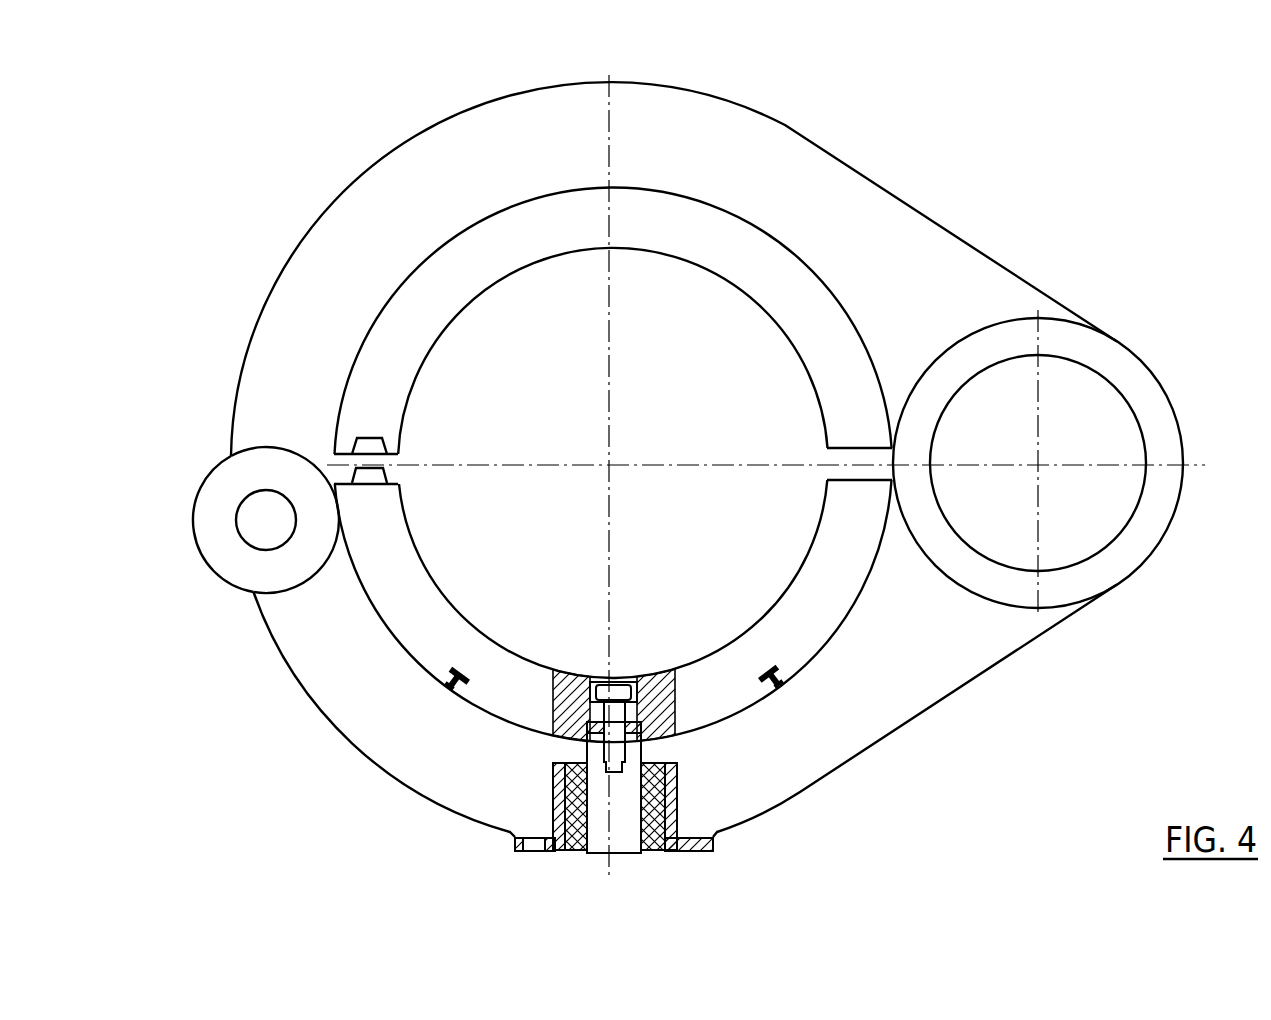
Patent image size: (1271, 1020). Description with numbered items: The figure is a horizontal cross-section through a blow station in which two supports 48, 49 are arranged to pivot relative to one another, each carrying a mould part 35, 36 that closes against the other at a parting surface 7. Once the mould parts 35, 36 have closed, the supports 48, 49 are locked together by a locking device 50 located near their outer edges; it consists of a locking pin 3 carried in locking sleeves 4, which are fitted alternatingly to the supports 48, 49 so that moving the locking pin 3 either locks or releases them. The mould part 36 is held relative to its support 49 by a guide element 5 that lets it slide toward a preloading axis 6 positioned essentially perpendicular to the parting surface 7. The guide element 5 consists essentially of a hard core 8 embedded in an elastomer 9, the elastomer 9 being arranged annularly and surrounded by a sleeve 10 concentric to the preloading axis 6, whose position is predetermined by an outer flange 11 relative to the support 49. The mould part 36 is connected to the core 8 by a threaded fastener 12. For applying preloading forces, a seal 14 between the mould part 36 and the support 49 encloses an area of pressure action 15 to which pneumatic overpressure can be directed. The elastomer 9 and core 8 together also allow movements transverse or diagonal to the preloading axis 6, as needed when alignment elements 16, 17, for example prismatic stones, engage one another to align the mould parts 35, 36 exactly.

The locking pin 3 is at (245, 546).
The locking sleeves 4 is at (203, 513).
The guide element 5 is at (650, 862).
The preloading axis 6 is at (613, 845).
The parting surface 7 is at (527, 470).
The hard core 8 is at (1047, 457).
The elastomer 9 is at (572, 842).
The sleeve 10 is at (677, 795).
The outer flange 11 is at (697, 845).
The threaded fastener 12 is at (553, 792).
The seal 14 is at (787, 683).
The area of pressure action 15 is at (473, 710).
The alignment element 16 is at (363, 487).
The alignment element 17 is at (352, 441).
The mould part 35 is at (813, 302).
The mould part 36 is at (835, 612).
The support 48 is at (766, 129).
The support 49 is at (978, 658).
The locking device 50 is at (250, 512).